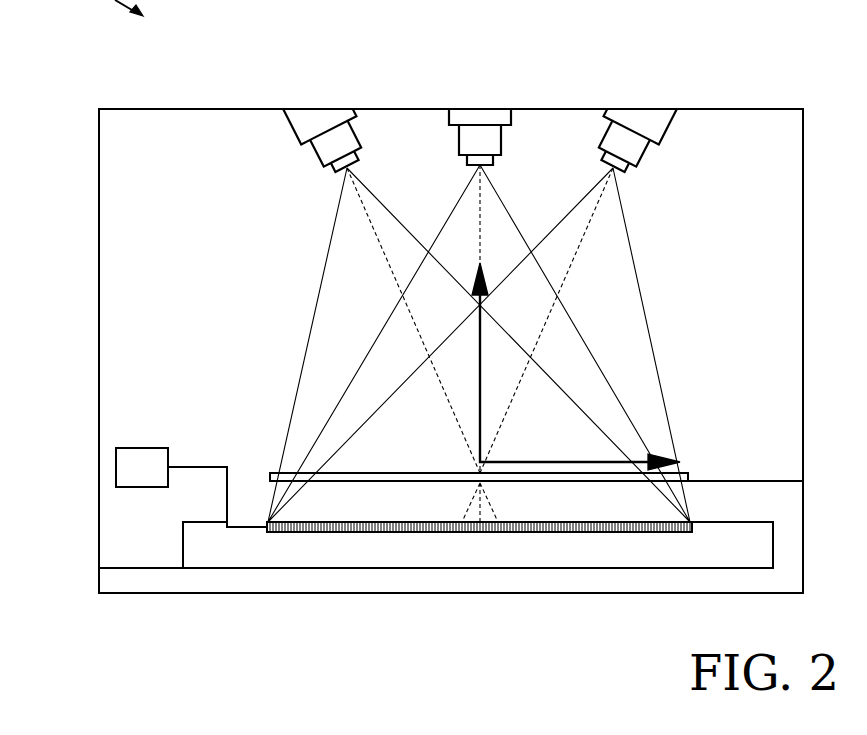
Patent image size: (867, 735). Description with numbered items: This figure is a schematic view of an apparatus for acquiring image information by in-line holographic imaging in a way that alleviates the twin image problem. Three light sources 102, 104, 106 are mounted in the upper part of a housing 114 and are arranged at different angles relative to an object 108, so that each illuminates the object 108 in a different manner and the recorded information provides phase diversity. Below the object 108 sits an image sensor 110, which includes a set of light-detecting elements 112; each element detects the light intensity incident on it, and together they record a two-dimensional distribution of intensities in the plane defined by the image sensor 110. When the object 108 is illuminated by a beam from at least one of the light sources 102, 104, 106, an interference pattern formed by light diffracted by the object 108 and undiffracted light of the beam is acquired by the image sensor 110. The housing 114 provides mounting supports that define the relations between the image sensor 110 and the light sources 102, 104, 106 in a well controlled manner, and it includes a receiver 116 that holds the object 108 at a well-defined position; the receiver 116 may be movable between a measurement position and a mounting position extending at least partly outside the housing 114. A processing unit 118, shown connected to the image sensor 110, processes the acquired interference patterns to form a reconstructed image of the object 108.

The light source 102 is at (357, 138).
The light source 104 is at (505, 137).
The light source 106 is at (645, 155).
The object 108 is at (688, 472).
The image sensor 110 is at (262, 532).
The light-detecting elements 112 is at (283, 532).
The housing 114 is at (788, 109).
The receiver 116 is at (785, 481).
The processing unit 118 is at (128, 465).